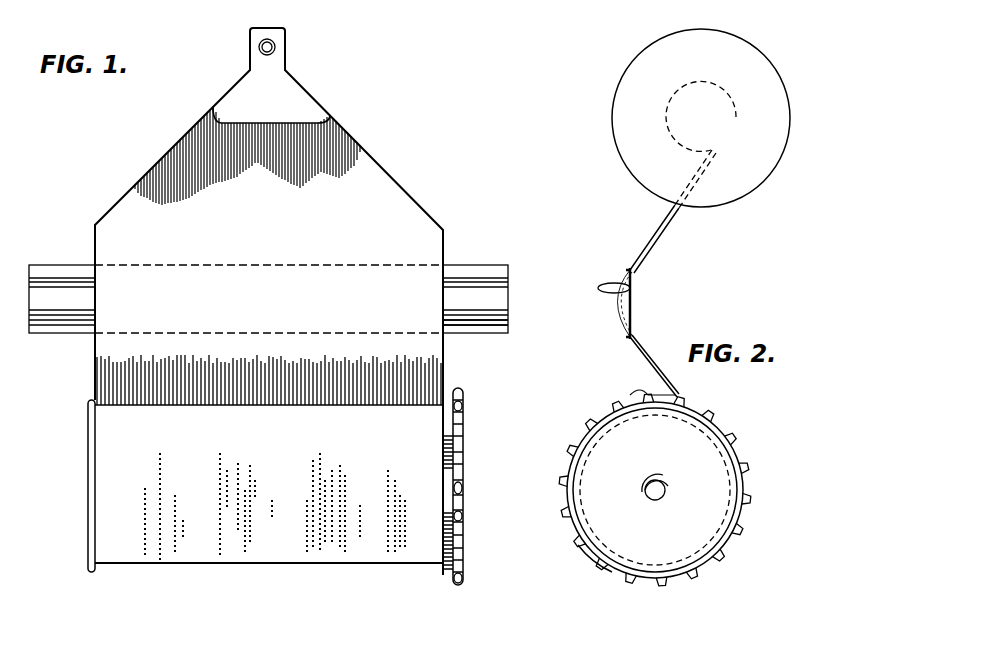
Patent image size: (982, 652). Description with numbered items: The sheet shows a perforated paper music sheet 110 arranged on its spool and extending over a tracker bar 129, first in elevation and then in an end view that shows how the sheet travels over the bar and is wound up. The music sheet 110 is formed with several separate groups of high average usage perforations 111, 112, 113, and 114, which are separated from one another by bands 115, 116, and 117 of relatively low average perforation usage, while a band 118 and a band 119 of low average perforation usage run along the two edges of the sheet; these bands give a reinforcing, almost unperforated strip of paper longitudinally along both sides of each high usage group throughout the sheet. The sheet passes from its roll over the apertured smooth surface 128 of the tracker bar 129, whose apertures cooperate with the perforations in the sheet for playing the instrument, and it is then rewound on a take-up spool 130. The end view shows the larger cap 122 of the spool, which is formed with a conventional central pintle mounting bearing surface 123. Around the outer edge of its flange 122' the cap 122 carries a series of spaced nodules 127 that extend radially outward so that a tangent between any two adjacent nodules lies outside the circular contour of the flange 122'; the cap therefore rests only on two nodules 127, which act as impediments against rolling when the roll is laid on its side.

In FIG. 1, the paper music sheet 110 is at (360, 137).
In FIG. 2, the paper music sheet 110 is at (653, 231).
In FIG. 1, the high average usage perforations group 111 is at (166, 558).
In FIG. 1, the high average usage perforations group 112 is at (238, 558).
In FIG. 1, the high average usage perforations group 113 is at (333, 558).
In FIG. 1, the high average usage perforations group 114 is at (393, 558).
In FIG. 1, the low average perforation usage band 115 is at (200, 558).
In FIG. 1, the low average perforation usage band 116 is at (287, 558).
In FIG. 1, the low average perforation usage band 117 is at (366, 558).
In FIG. 1, the edge band 118 is at (129, 558).
In FIG. 1, the edge band 119 is at (429, 558).
In FIG. 2, the cap 122 is at (630, 490).
In FIG. 2, the flange 122' is at (582, 567).
In FIG. 2, the pintle mounting bearing surface 123 is at (658, 483).
In FIG. 2, the nodules 127 is at (700, 568).
In FIG. 1, the apertured smooth surface 128 is at (450, 329).
In FIG. 2, the apertured smooth surface 128 is at (632, 283).
In FIG. 1, the tracker bar 129 is at (483, 267).
In FIG. 2, the tracker bar 129 is at (632, 312).
In FIG. 2, the take-up spool 130 is at (623, 76).